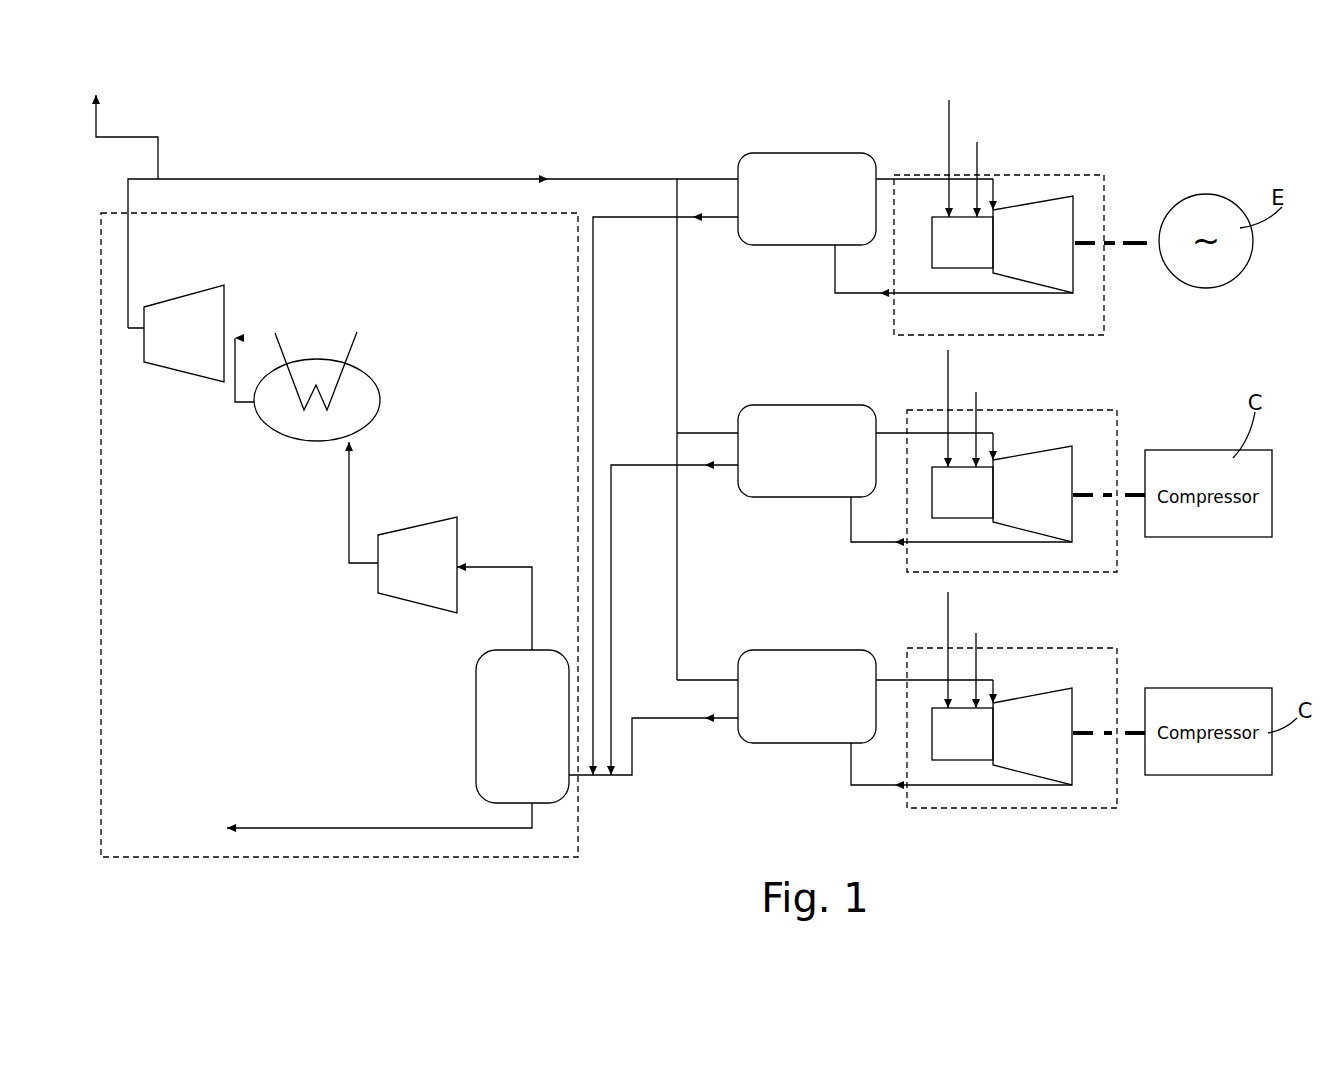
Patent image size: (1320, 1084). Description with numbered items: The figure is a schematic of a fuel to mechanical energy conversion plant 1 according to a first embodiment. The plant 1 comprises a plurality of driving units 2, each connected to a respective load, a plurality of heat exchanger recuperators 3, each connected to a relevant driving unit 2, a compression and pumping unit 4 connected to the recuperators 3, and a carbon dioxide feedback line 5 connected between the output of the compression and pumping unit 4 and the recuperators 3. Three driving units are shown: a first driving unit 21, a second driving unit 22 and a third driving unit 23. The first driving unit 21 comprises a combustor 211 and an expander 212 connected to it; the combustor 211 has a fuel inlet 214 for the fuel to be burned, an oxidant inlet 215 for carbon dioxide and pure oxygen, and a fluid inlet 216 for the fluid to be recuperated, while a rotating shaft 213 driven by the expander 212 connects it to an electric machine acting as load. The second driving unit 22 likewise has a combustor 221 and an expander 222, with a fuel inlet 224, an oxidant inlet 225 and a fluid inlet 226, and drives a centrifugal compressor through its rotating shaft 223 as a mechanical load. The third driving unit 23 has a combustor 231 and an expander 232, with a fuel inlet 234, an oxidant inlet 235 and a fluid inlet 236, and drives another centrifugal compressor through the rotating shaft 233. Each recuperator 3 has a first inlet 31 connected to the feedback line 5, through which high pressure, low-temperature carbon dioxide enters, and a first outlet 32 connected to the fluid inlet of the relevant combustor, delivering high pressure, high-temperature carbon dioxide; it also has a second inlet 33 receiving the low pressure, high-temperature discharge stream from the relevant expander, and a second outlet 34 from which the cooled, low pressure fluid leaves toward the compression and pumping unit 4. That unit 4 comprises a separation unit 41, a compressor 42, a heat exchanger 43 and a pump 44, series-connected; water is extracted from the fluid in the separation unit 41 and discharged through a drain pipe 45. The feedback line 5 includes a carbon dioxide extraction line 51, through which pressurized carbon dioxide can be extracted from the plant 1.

The energy conversion plant 1 is at (1244, 103).
The driving unit 2 is at (1090, 124).
The heat exchanger recuperator 3 is at (772, 167).
The compression and pumping unit 4 is at (570, 837).
The carbon dioxide feedback line 5 is at (290, 178).
The first driving unit 21 is at (1104, 193).
The second driving unit 22 is at (1117, 437).
The third driving unit 23 is at (1117, 665).
The first inlet 31 is at (738, 179).
The first outlet 32 is at (878, 175).
The second inlet 33 is at (835, 250).
The second outlet 34 is at (733, 219).
The separation unit 41 is at (476, 715).
The compressor 42 is at (442, 515).
The heat exchanger 43 is at (378, 392).
The pump 44 is at (224, 300).
The drain pipe 45 is at (303, 828).
The carbon dioxide extraction line 51 is at (97, 123).
The combustor 211 is at (943, 252).
The expander 212 is at (1073, 280).
The rotating shaft 213 is at (1132, 245).
The fuel inlet 214 is at (949, 120).
The oxidant inlet 215 is at (977, 160).
The fluid inlet 216 is at (993, 197).
The combustor 221 is at (978, 515).
The expander 222 is at (1060, 487).
The rotating shaft 223 is at (1135, 500).
The fuel inlet 224 is at (948, 370).
The oxidant inlet 225 is at (976, 405).
The fluid inlet 226 is at (993, 447).
The combustor 231 is at (972, 742).
The expander 232 is at (1053, 750).
The rotating shaft 233 is at (1123, 735).
The fuel inlet 234 is at (948, 613).
The oxidant inlet 235 is at (976, 641).
The fluid inlet 236 is at (993, 688).